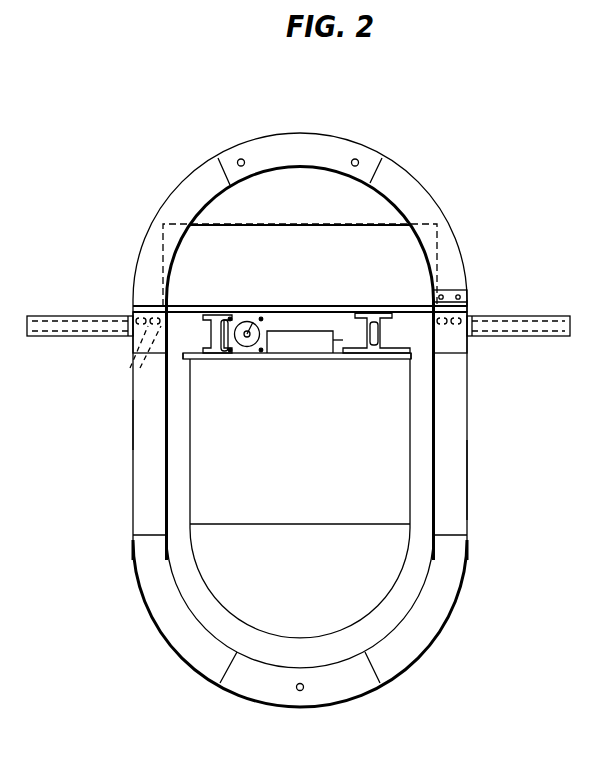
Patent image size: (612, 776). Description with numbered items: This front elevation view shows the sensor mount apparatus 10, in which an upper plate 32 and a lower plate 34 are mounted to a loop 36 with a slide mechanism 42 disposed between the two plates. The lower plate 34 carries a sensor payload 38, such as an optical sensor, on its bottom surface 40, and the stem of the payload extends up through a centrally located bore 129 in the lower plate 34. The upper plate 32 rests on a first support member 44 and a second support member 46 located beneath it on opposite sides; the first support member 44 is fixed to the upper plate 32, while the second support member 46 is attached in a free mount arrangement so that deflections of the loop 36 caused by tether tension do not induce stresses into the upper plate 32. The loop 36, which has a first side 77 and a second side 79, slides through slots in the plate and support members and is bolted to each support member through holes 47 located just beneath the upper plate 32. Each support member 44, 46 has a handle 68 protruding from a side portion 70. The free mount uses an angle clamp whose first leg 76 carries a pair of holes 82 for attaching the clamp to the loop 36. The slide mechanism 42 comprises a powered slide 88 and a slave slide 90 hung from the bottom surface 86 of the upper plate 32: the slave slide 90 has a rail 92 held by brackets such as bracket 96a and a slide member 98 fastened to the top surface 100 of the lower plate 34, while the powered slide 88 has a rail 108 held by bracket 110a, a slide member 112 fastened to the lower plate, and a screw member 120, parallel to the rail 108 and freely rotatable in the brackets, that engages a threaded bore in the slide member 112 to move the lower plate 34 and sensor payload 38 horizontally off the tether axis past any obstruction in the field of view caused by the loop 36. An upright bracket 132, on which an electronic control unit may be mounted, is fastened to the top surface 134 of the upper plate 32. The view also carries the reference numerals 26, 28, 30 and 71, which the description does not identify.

The sensor mount apparatus 10 is at (532, 141).
The mounting hole 26 is at (241, 158).
The mounting hole 28 is at (355, 158).
The mounting hole 30 is at (300, 691).
The upper plate 32 is at (462, 280).
The lower plate 34 is at (378, 367).
The loop 36 is at (446, 576).
The sensor payload 38 is at (340, 606).
The bottom surface 40 is at (347, 357).
The slide mechanism 42 is at (125, 431).
The first support member 44 is at (130, 351).
The second support member 46 is at (488, 353).
The holes 47 is at (130, 350).
The handle 68 is at (95, 316).
The side portion 70 is at (114, 343).
The bracket flange 71 is at (163, 346).
The first leg 76 is at (468, 306).
The first side 77 is at (190, 335).
The second side 79 is at (472, 487).
The holes 82 is at (467, 292).
The bottom surface 86 is at (306, 312).
The powered slide 88 is at (234, 364).
The slave slide 90 is at (343, 340).
The frame member 92 is at (388, 312).
The bracket 96a is at (375, 314).
The slide member 98 is at (420, 358).
The top surface 100 is at (290, 348).
The frame member 108 is at (183, 300).
The bracket 110a is at (208, 316).
The slide member 112 is at (210, 358).
The screw member 120 is at (256, 330).
The bore 129 is at (302, 354).
The upright bracket 132 is at (313, 274).
The top surface 134 is at (210, 316).